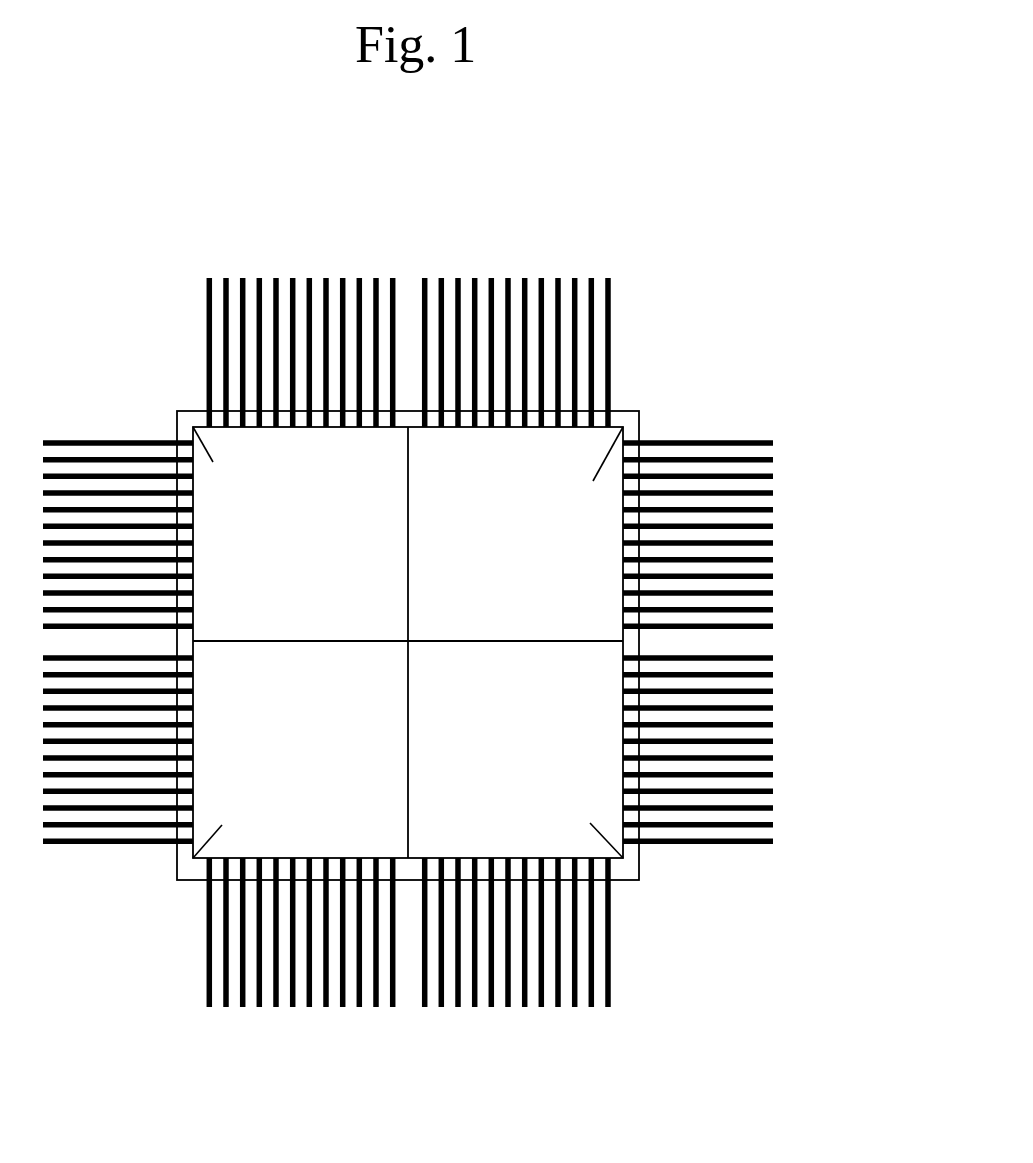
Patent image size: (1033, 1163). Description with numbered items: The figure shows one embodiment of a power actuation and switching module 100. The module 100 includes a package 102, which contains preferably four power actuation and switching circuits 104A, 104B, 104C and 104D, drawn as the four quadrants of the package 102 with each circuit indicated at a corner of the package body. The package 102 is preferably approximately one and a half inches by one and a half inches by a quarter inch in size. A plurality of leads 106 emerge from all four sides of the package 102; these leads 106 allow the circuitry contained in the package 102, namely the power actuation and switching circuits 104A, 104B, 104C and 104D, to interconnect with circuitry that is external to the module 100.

The power actuation and switching module 100 is at (684, 308).
The package 102 is at (471, 614).
The power actuation and switching circuit 104A is at (689, 432).
The power actuation and switching circuit 104B is at (121, 406).
The power actuation and switching circuit 104C is at (126, 861).
The power actuation and switching circuit 104D is at (697, 866).
The leads 106 is at (802, 560).